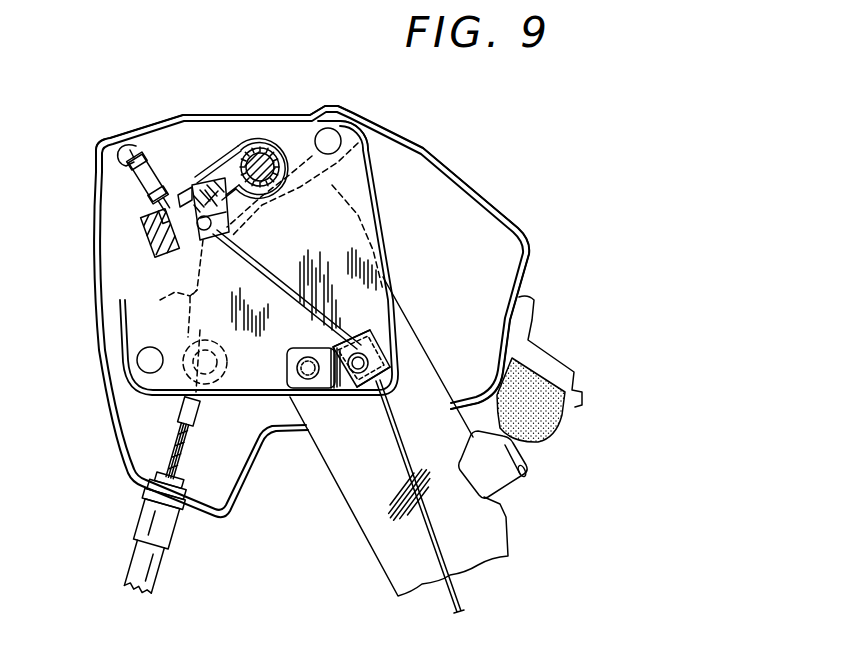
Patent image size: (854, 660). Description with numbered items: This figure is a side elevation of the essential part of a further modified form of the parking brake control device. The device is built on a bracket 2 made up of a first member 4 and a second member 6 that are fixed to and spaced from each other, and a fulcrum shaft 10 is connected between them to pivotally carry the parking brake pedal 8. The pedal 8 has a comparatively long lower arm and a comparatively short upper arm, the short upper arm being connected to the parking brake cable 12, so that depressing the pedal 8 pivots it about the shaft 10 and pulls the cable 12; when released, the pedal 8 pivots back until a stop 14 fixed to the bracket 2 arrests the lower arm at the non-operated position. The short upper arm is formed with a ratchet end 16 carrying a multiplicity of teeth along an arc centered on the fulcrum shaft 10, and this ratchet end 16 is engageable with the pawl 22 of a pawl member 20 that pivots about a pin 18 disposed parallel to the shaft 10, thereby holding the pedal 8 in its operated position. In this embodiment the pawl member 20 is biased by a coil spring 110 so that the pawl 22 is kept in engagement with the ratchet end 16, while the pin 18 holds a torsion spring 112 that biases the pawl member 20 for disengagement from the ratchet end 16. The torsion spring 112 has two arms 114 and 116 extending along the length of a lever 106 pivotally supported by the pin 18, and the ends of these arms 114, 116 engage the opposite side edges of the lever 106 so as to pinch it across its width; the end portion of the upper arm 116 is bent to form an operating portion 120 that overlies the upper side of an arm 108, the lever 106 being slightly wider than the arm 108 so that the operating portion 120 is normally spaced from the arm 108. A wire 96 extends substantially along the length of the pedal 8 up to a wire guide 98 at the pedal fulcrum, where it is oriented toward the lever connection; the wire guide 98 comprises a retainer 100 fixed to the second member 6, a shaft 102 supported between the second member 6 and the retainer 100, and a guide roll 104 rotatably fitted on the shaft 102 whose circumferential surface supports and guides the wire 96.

The bracket 2 is at (474, 161).
The first member 4 is at (475, 248).
The second member 6 is at (353, 167).
The parking brake pedal 8 is at (362, 500).
The fulcrum shaft 10 is at (188, 152).
The parking brake cable 12 is at (182, 457).
The stop 14 is at (543, 430).
The ratchet end 16 is at (160, 300).
The pin 18 is at (264, 160).
The pawl member 20 is at (307, 139).
The pawl 22 is at (364, 130).
The wire 96 is at (447, 600).
The wire guide 98 is at (394, 336).
The retainer 100 is at (327, 392).
The shaft 102 is at (376, 370).
The guide roll 104 is at (354, 383).
The lever 106 is at (186, 203).
The arm 108 is at (180, 236).
The coil spring 110 is at (138, 200).
The torsion spring 112 is at (239, 130).
The arm 114 is at (304, 278).
The arm 116 is at (218, 163).
The operating portion 120 is at (198, 155).